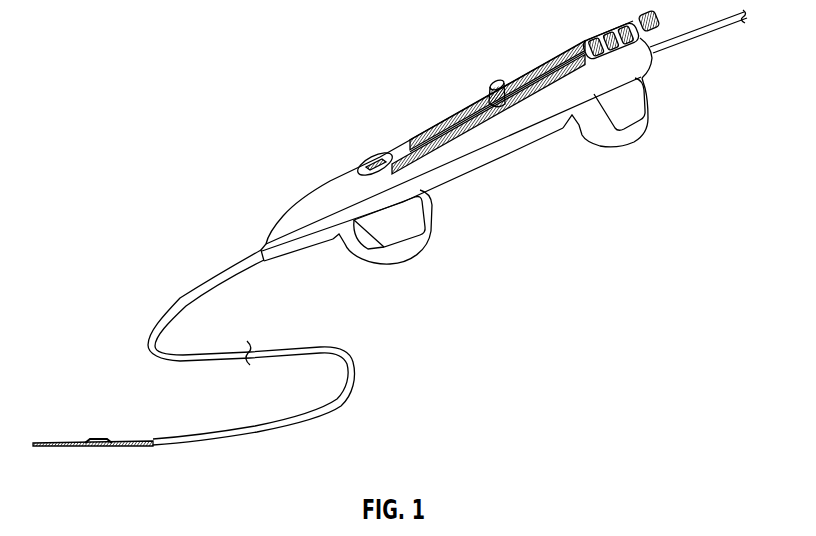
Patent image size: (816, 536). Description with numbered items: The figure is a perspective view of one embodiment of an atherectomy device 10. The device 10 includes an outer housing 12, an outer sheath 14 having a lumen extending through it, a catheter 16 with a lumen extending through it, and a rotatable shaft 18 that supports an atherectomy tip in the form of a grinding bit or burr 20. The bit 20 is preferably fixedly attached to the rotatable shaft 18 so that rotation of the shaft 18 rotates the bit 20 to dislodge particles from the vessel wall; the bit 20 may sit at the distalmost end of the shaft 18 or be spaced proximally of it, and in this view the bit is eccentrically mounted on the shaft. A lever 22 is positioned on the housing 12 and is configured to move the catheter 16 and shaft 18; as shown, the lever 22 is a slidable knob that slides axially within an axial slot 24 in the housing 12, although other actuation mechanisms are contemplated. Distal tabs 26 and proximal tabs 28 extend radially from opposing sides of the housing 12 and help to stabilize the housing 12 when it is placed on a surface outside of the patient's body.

The atherectomy device 10 is at (136, 108).
The outer housing 12 is at (495, 160).
The outer sheath 14 is at (207, 278).
The catheter 16 is at (202, 445).
The rotatable shaft 18 is at (143, 441).
The grinding bit 20 is at (97, 439).
The lever 22 is at (495, 80).
The axial slot 24 is at (455, 113).
The distal tabs 26 is at (410, 251).
The proximal tabs 28 is at (632, 130).